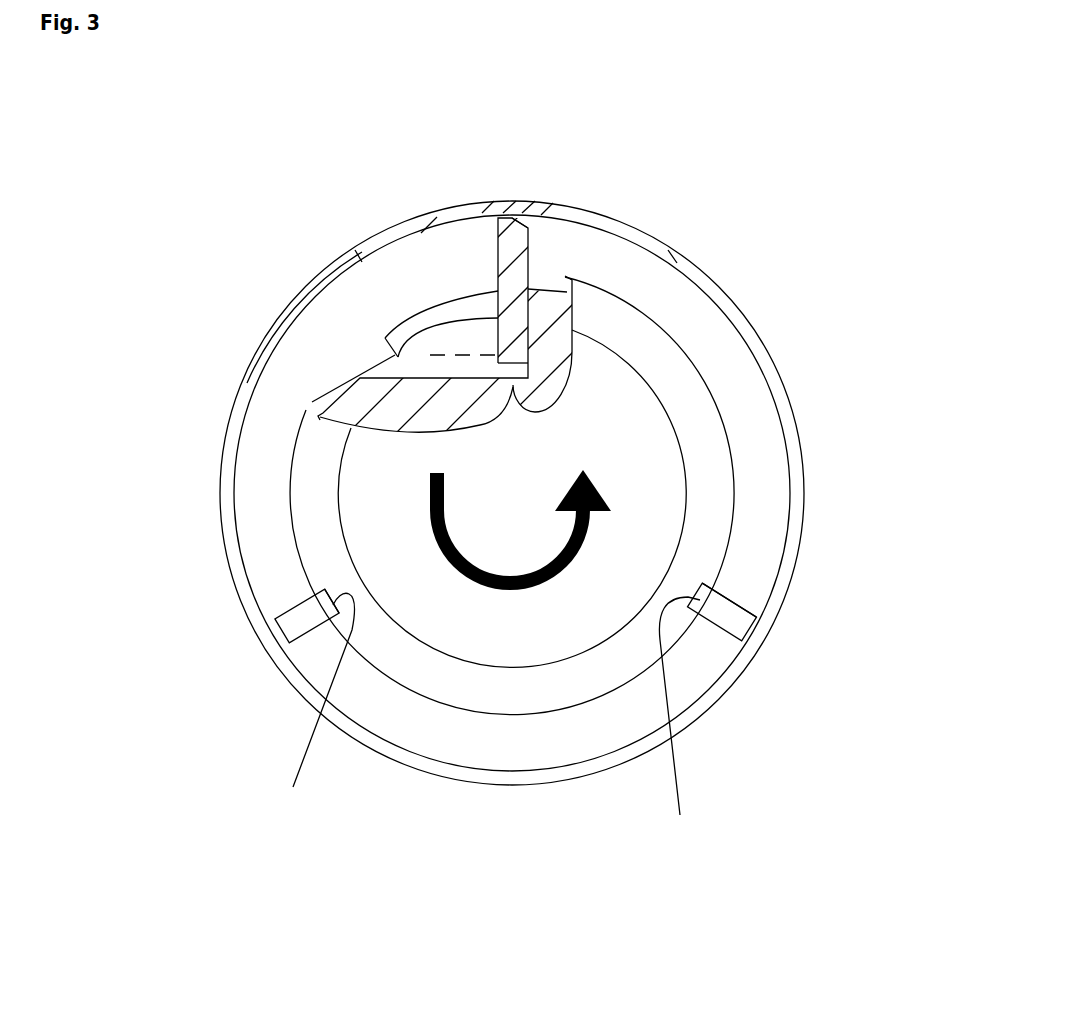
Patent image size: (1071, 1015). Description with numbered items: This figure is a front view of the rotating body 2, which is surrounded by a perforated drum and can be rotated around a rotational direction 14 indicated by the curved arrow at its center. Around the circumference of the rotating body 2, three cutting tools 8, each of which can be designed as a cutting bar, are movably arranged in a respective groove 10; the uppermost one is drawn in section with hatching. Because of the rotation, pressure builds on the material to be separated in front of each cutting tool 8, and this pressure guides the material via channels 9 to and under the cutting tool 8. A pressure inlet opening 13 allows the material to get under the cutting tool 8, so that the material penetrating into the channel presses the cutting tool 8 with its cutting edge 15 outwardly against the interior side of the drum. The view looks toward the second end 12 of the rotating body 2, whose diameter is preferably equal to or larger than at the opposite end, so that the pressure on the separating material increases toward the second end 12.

The rotating body 2 is at (683, 400).
The cutting tool 8 is at (512, 256).
The channels 9 is at (515, 372).
The groove 10 is at (566, 405).
The second end 12 is at (627, 543).
The pressure inlet opening 13 is at (417, 357).
The rotational direction 14 is at (502, 592).
The cutting edge 15 is at (528, 222).